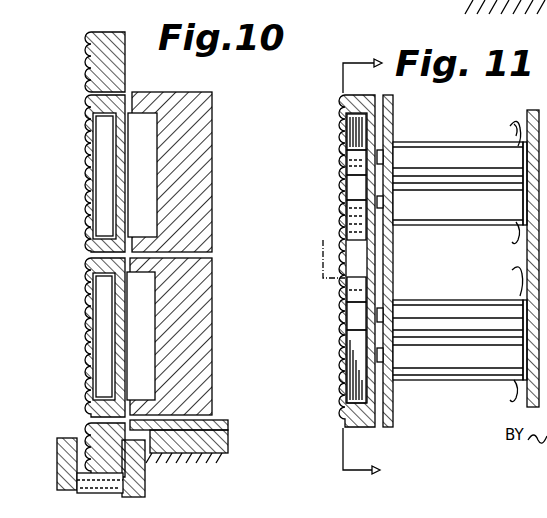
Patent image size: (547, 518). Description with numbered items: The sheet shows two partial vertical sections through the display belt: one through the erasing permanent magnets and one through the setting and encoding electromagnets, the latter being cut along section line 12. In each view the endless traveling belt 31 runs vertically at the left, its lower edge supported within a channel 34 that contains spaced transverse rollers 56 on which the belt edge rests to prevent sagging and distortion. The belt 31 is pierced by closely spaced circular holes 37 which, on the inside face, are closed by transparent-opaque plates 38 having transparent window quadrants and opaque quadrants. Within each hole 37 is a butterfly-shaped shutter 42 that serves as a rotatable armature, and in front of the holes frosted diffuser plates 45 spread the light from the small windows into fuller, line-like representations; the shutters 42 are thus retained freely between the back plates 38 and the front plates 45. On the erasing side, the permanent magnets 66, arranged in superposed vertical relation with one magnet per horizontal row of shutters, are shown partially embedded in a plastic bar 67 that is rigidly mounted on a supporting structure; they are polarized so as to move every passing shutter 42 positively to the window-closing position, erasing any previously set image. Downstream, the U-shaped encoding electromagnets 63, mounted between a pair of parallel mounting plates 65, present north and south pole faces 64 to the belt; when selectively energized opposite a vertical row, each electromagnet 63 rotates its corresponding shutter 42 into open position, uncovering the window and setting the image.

In FIG. 11, the section line 12- 12 is at (365, 271).
In FIG. 10, the endless traveling belt 31 is at (92, 66).
In FIG. 11, the endless traveling belt 31 is at (336, 106).
In FIG. 10, the channels 34 is at (58, 458).
In FIG. 10, the holes 37 is at (86, 247).
In FIG. 11, the holes 37 is at (346, 284).
In FIG. 10, the transparent-opaque plates 38 is at (112, 308).
In FIG. 11, the transparent-opaque plates 38 is at (386, 130).
In FIG. 10, the shutters 42 is at (100, 170).
In FIG. 11, the shutters 42 is at (348, 212).
In FIG. 10, the diffuser plates 45 is at (84, 344).
In FIG. 11, the diffuser plates 45 is at (340, 238).
In FIG. 10, the rollers 56 is at (108, 488).
In FIG. 11, the encoding electromagnets 63 is at (476, 142).
In FIG. 11, the pole faces 64 is at (345, 186).
In FIG. 11, the mounting plates 65 is at (530, 260).
In FIG. 10, the erasing permanent magnets 66 is at (152, 138).
In FIG. 10, the plastic bar 67 is at (195, 307).